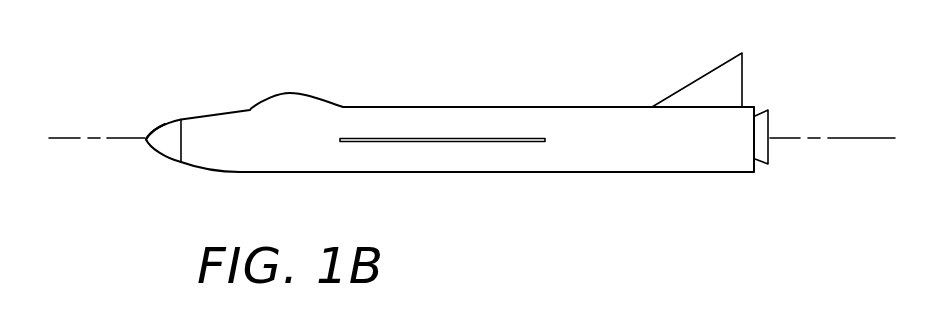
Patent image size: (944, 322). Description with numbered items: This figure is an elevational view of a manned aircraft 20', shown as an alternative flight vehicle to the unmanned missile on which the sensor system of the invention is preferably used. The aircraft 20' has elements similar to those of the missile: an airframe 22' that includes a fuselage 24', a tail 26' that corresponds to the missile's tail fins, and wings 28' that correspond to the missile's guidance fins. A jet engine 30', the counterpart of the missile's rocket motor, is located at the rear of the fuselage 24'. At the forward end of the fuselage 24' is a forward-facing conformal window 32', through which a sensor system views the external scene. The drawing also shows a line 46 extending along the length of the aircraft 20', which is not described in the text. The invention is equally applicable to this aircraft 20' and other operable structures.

The manned aircraft 20' is at (450, 98).
The airframe 22' is at (451, 85).
The fuselage 24' is at (430, 195).
The tail 26' is at (697, 68).
The wings 28' is at (442, 103).
The jet engine 30' is at (787, 155).
The forward-facing conformal window 32' is at (130, 116).
The longitudinal axis 46 is at (70, 138).